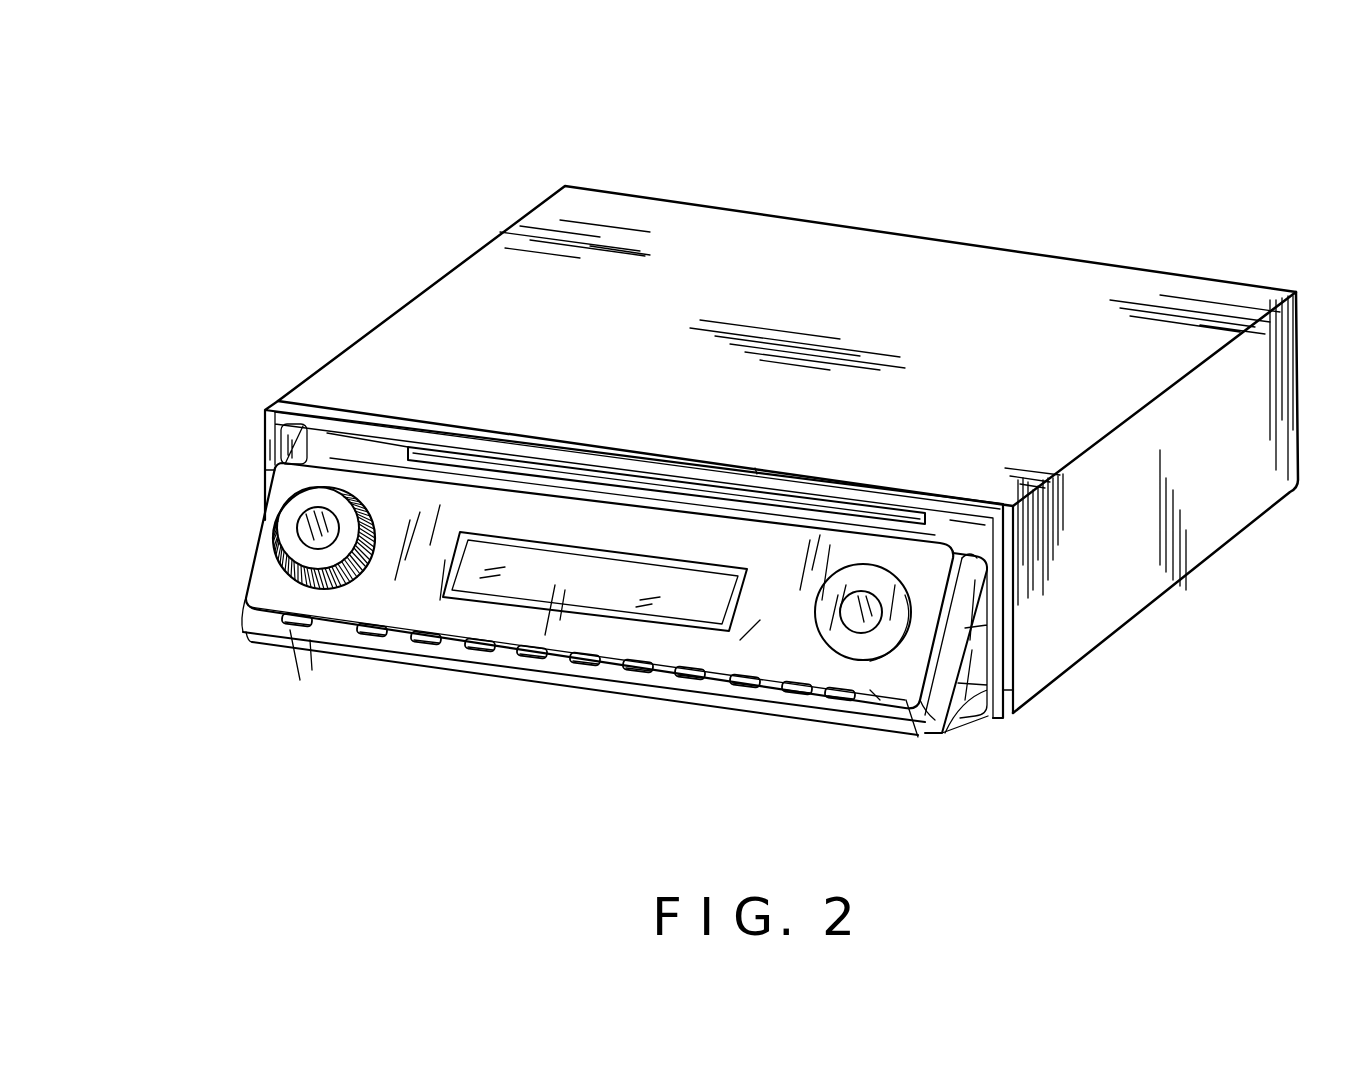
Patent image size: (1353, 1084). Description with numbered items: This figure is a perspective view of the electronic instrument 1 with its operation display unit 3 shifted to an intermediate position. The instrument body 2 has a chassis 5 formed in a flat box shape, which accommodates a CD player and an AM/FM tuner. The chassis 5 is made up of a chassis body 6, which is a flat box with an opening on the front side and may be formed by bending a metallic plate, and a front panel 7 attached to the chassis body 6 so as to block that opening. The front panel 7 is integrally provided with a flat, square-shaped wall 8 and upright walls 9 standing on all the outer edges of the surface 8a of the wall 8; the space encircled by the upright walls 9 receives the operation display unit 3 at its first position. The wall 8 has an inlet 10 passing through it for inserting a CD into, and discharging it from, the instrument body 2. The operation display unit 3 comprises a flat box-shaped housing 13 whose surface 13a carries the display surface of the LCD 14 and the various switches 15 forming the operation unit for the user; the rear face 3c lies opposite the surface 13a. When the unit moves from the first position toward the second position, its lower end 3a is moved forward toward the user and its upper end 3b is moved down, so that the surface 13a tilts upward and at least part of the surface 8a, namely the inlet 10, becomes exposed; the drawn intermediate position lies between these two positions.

The electronic instrument 1 is at (943, 215).
The instrument body 2 is at (1155, 270).
The operation display unit 3 is at (653, 628).
The lower end 3a is at (953, 723).
The upper end 3b is at (970, 530).
The rear face 3c is at (990, 720).
The chassis 5 is at (548, 479).
The chassis body 6 is at (300, 398).
The front panel 7 is at (267, 430).
The wall 8 is at (947, 512).
The surface 8a is at (350, 443).
The upright walls 9 is at (263, 470).
The inlet 10 is at (520, 490).
The housing 13 is at (918, 737).
The surface 13a is at (750, 630).
The LCD 14 is at (640, 600).
The switches 15 is at (325, 580).